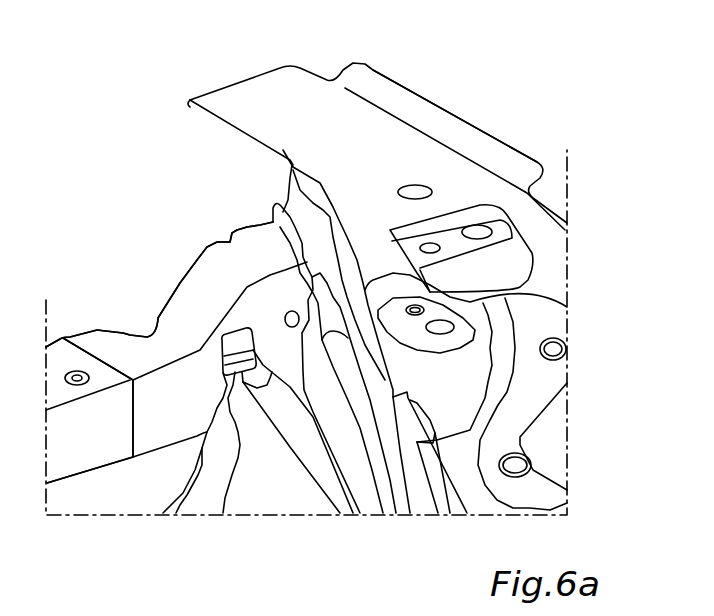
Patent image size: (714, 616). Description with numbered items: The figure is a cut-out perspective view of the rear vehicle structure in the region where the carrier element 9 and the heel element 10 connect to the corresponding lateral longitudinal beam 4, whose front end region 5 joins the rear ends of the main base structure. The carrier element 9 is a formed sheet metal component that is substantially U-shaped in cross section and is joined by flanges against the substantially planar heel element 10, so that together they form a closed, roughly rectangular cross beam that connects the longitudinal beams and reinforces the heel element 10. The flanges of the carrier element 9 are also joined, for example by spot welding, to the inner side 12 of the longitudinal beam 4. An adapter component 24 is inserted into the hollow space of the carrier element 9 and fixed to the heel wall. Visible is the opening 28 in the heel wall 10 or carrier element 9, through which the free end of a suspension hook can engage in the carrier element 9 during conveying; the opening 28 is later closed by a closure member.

The longitudinal beam 4 is at (410, 147).
The front end region 5 is at (290, 113).
The carrier element 9 is at (196, 300).
The heel element 10 is at (192, 292).
The inner side 12 is at (323, 325).
The adapter component 24 is at (237, 357).
The opening 28 is at (252, 353).